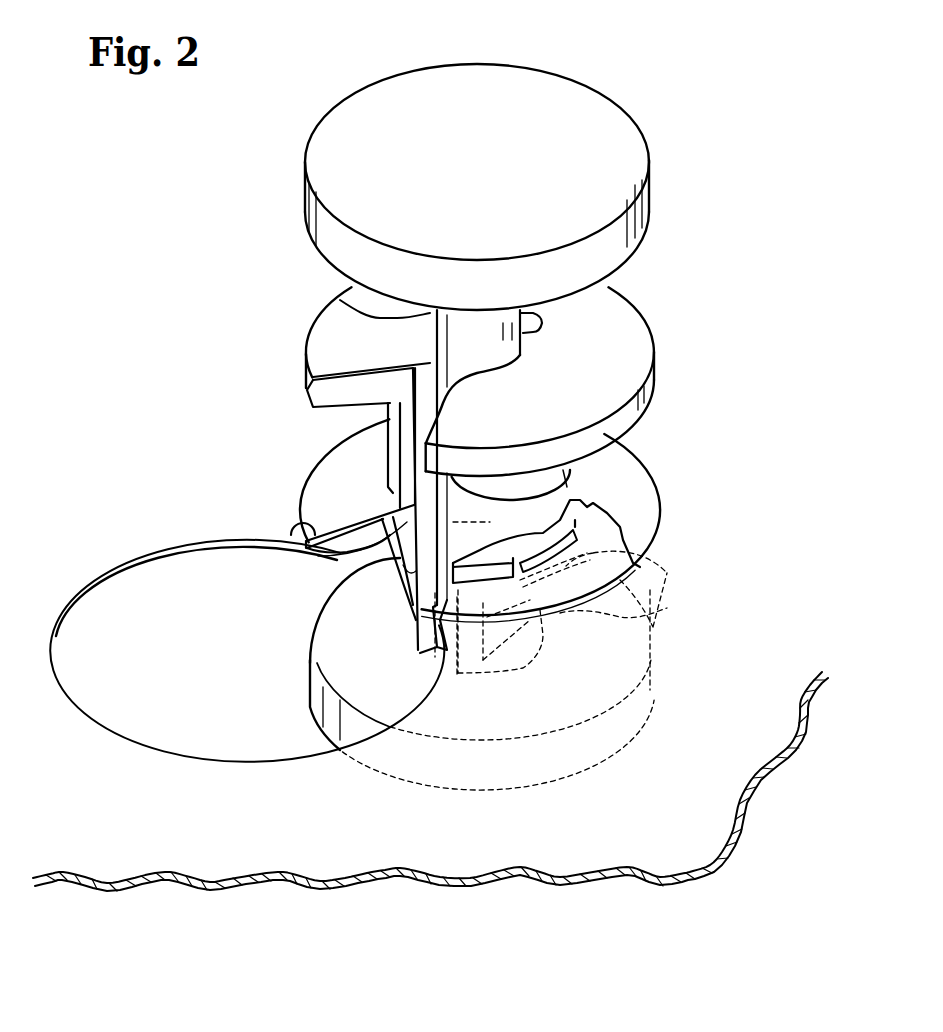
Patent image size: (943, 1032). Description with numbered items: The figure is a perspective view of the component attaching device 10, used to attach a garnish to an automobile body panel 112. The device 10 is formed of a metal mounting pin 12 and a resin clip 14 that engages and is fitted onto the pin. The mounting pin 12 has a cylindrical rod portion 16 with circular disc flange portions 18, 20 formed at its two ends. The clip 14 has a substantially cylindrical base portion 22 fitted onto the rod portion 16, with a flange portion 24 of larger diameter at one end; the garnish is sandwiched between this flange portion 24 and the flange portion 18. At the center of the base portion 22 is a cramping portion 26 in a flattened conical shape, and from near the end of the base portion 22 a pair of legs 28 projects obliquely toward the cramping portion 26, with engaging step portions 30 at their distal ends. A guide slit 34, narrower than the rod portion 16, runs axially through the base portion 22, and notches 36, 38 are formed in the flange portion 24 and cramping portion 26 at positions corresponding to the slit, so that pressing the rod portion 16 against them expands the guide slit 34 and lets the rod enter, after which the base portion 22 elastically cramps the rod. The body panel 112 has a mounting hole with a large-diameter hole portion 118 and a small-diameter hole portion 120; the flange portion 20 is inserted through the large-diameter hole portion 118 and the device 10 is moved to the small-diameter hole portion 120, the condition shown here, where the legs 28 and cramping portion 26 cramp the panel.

The component attaching device 10 is at (720, 175).
The mounting pin 12 is at (578, 80).
The clip 14 is at (655, 376).
The rod portion 16 is at (357, 293).
The flange portion 18 is at (306, 152).
The flange portion 20 is at (308, 663).
The base portion 22 is at (388, 418).
The flange portion 24 is at (307, 358).
The cramping portion 26 is at (298, 495).
The legs 28 is at (378, 558).
The engaging step portions 30 is at (620, 560).
The guide slit 34 is at (423, 368).
The notch 36 is at (310, 390).
The notch 38 is at (292, 530).
The body panel 112 is at (727, 858).
The large-diameter hole portion 118 is at (290, 750).
The small-diameter hole portion 120 is at (598, 507).